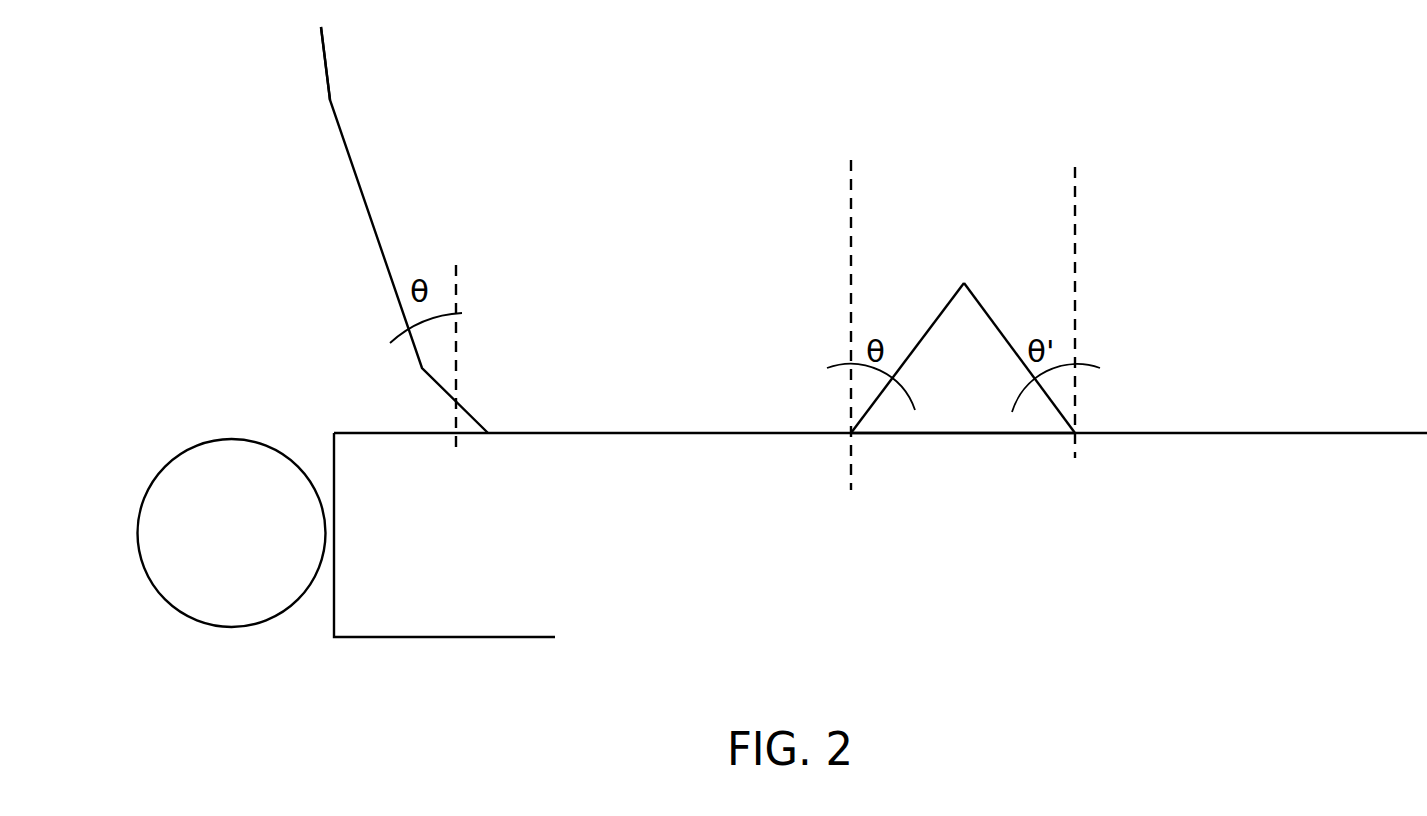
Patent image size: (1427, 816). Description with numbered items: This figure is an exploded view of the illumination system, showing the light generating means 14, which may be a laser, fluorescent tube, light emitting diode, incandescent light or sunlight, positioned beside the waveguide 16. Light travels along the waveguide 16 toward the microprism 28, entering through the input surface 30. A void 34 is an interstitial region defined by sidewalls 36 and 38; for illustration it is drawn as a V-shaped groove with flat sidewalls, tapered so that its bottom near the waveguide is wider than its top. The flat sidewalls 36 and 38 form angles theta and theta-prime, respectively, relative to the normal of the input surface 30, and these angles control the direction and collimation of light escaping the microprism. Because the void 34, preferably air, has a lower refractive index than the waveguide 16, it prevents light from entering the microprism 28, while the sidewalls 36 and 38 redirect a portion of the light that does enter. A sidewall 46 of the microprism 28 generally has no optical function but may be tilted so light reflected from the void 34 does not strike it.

The light generating means 14 is at (158, 592).
The waveguide 16 is at (502, 638).
The microprism 28 is at (378, 173).
The input surface 30 is at (705, 433).
The void 34 is at (962, 420).
The sidewall 36 is at (933, 320).
The sidewall 38 is at (993, 320).
The sidewall 46 is at (316, 60).